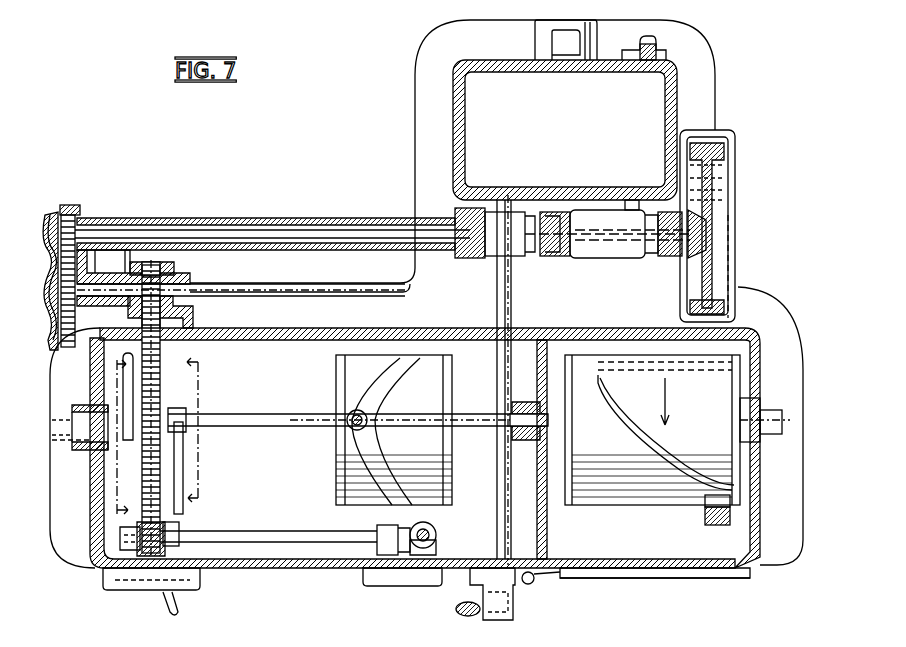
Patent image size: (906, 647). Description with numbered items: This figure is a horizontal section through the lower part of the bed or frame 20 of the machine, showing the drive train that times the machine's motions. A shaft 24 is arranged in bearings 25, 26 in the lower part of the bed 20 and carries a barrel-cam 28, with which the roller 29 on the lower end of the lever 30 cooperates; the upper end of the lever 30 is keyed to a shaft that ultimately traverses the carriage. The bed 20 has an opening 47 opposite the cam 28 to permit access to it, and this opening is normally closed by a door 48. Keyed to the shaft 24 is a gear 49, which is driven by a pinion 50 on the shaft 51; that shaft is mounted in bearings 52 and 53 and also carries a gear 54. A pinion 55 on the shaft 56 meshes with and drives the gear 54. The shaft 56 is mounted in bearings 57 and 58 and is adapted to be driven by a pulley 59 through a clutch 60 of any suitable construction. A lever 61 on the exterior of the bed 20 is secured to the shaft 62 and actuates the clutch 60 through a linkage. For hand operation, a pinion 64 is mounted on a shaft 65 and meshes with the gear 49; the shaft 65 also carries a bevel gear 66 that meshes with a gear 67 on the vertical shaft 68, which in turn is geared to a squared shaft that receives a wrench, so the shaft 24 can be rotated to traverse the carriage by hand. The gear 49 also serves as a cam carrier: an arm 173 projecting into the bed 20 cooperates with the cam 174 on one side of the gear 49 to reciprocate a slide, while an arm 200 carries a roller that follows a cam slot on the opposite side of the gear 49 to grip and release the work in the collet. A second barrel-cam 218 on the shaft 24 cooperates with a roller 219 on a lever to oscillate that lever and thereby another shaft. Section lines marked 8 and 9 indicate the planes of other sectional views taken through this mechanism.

The bed or frame 20 is at (762, 525).
The shaft 24 is at (262, 432).
The bearing 25 is at (75, 407).
The bearing 26 is at (520, 402).
The barrel-cam 28 is at (677, 430).
The roller 29 is at (705, 500).
The lever 30 is at (705, 518).
The opening 47 is at (594, 562).
The door 48 is at (650, 580).
The gear 49 is at (180, 530).
The pinion 50 is at (160, 268).
The shaft 51 is at (118, 289).
The bearing 52 is at (195, 306).
The bearing 53 is at (100, 265).
The gear 54 is at (60, 262).
The pinion 55 is at (66, 205).
The shaft 56 is at (245, 228).
The bearing 57 is at (125, 223).
The bearing 58 is at (480, 205).
The pulley 59 is at (705, 135).
The clutch 60 is at (568, 258).
The lever 61 is at (466, 616).
The shaft 62 is at (495, 478).
The pinion 64 is at (150, 565).
The shaft 65 is at (285, 531).
The bevel gear 66 is at (420, 522).
The gear 67 is at (436, 530).
The vertical shaft 68 is at (436, 548).
The section line 8- 8 is at (192, 427).
The section line 9- 9 is at (116, 440).
The arm 173 is at (124, 395).
The cam 174 is at (150, 490).
The arm 200 is at (183, 472).
The barrel-cam 218 is at (385, 400).
The roller 219 is at (352, 415).